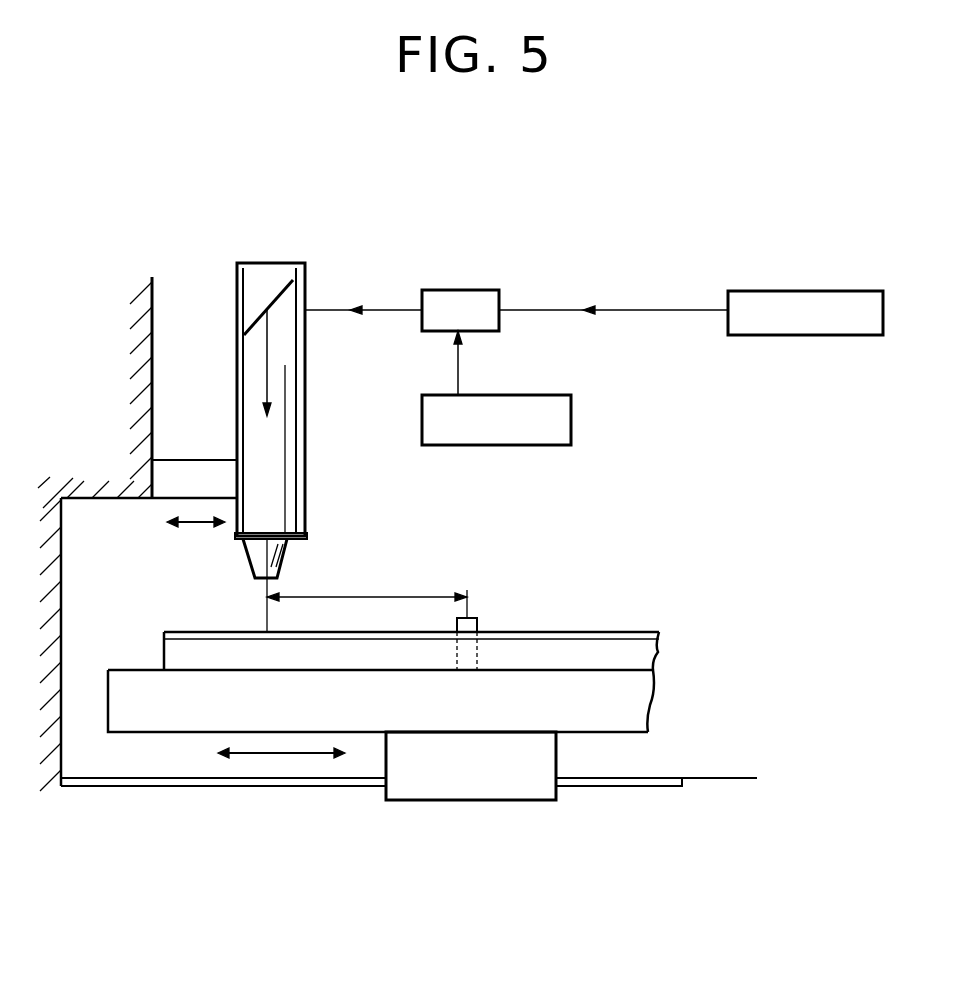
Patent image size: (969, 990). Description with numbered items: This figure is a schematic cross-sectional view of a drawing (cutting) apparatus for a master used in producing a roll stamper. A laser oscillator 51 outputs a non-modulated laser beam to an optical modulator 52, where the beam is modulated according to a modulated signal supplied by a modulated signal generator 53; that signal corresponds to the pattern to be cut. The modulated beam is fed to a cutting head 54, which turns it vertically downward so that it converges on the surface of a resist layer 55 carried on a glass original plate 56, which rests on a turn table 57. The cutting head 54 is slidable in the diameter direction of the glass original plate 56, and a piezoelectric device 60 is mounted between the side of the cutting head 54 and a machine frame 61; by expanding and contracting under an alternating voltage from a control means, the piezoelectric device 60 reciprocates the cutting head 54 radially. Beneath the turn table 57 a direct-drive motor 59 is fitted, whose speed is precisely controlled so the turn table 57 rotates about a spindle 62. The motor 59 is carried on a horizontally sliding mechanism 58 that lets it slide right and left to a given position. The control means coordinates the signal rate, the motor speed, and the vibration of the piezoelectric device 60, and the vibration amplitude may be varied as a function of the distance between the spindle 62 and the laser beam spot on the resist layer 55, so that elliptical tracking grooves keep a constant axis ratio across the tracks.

The laser oscillator 51 is at (742, 291).
The optical modulator 52 is at (473, 290).
The modulated signal generator 53 is at (571, 407).
The cutting head 54 is at (281, 263).
The resist layer 55 is at (520, 632).
The glass original plate 56 is at (657, 654).
The turn table 57 is at (655, 691).
The horizontally sliding mechanism 58 is at (670, 778).
The motor 59 is at (525, 803).
The piezoelectric device 60 is at (183, 460).
The machine frame 61 is at (155, 290).
The spindle 62 is at (478, 617).